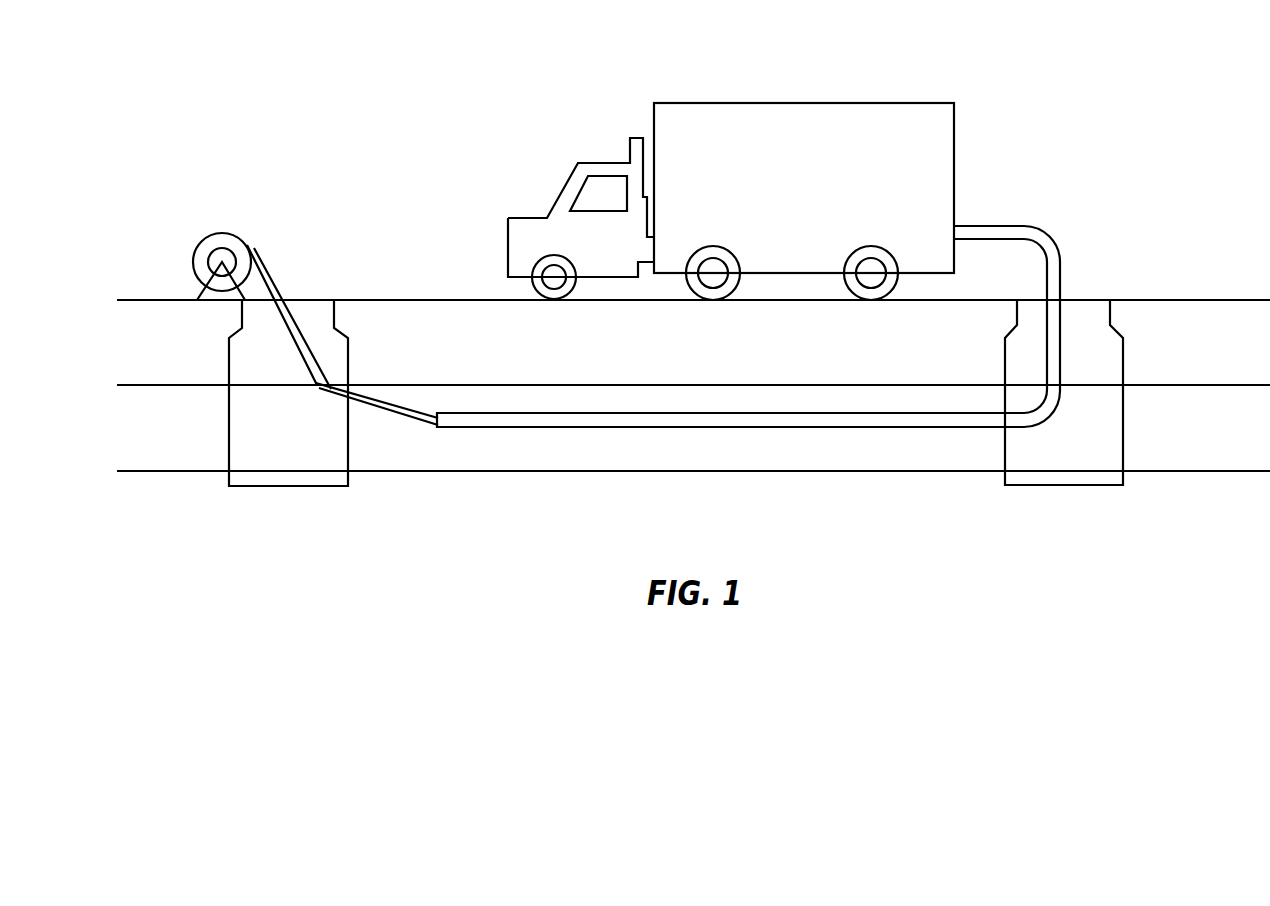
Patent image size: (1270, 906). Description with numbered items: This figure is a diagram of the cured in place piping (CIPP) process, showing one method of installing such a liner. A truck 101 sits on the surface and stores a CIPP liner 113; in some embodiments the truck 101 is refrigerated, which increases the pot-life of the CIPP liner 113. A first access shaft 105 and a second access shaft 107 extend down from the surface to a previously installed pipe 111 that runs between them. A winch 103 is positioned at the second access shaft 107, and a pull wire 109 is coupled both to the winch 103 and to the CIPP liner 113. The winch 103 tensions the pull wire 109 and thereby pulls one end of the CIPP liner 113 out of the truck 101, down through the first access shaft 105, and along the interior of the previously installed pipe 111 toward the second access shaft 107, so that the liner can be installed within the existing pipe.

The truck 101 is at (803, 120).
The winch 103 is at (222, 248).
The first access shaft 105 is at (1087, 299).
The second access shaft 107 is at (289, 462).
The pull wire 109 is at (395, 413).
The previously installed pipe 111 is at (913, 473).
The CIPP liner 113 is at (1032, 233).